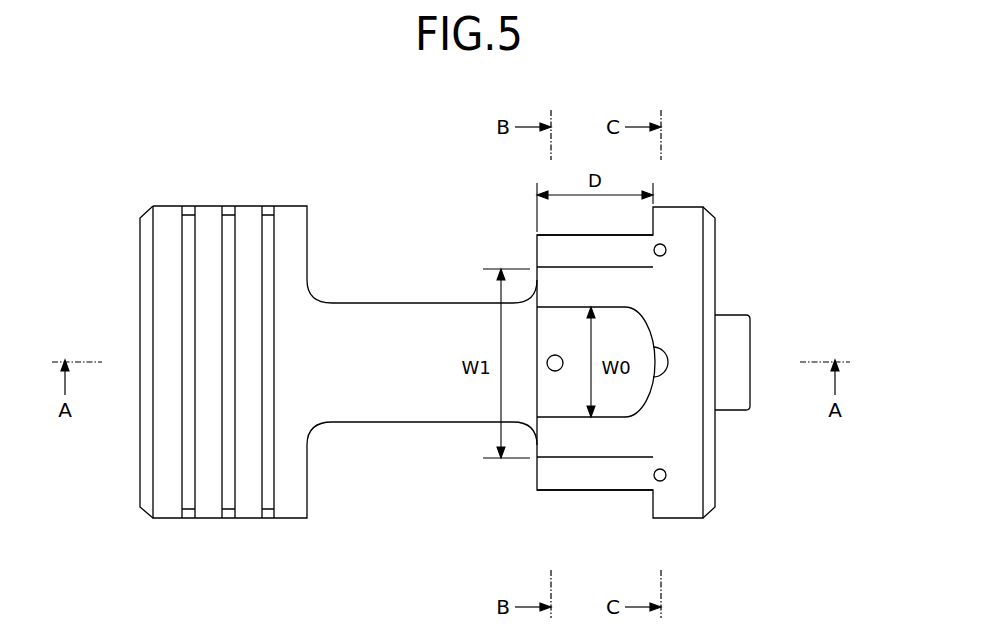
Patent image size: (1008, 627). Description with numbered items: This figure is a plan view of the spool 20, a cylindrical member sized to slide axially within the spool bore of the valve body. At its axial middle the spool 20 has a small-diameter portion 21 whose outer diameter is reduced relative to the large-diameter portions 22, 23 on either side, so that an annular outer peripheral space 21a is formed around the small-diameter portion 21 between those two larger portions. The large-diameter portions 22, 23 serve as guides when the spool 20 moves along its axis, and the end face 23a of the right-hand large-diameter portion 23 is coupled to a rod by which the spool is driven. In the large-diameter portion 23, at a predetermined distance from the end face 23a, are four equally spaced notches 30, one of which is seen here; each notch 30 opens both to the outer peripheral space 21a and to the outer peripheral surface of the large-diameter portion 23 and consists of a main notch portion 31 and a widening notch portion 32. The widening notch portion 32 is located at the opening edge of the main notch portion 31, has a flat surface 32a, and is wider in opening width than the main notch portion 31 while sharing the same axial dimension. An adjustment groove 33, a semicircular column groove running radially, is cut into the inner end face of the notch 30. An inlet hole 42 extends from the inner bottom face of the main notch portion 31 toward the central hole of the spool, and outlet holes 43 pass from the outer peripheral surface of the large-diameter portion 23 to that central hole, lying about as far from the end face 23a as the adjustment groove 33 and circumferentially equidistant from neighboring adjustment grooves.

The spool 20 is at (333, 170).
The small-diameter portion 21 is at (373, 312).
The outer peripheral space 21a is at (351, 468).
The large-diameter portion 22 is at (292, 220).
The large-diameter portion 23 is at (692, 215).
The end face 23a is at (724, 490).
The notch 30 is at (576, 542).
The main notch portion 31 is at (613, 418).
The widening notch portion 32 is at (644, 453).
The flat surface 32a is at (630, 283).
The adjustment groove 33 is at (668, 352).
The inlet hole 42 is at (556, 372).
The outlet hole 43 is at (664, 244).